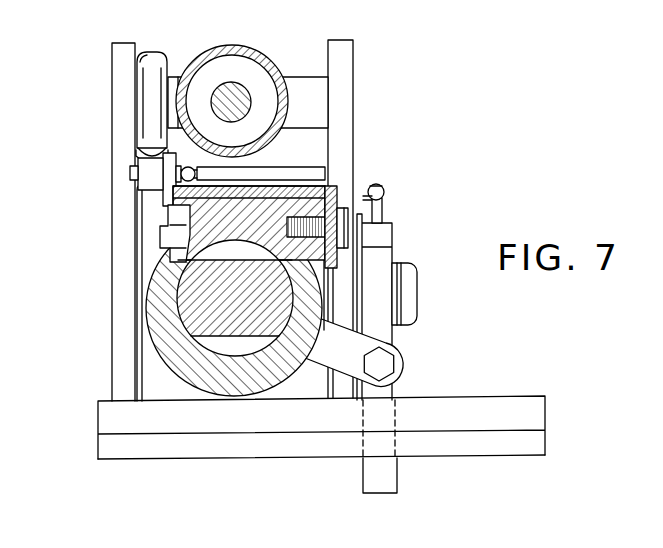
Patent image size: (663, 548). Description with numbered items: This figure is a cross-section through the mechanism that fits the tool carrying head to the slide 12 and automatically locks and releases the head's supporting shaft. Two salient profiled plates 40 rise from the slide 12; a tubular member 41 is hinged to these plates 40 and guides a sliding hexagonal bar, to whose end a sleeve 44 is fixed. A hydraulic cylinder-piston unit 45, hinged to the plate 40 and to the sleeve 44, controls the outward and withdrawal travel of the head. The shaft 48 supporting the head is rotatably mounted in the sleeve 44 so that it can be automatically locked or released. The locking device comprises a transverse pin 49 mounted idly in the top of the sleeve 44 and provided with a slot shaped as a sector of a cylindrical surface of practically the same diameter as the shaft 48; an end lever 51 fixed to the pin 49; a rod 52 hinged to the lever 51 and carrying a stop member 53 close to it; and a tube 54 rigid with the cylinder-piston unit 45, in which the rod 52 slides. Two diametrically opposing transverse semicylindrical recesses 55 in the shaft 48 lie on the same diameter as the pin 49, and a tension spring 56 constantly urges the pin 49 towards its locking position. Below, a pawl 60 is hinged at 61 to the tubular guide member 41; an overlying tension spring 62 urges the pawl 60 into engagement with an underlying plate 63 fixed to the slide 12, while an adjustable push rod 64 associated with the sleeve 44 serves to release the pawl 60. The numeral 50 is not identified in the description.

The slide 12 is at (527, 452).
The salient profiled plates 40 is at (122, 48).
The tubular member 41 is at (158, 388).
The sleeve 44 is at (160, 348).
The hydraulic cylinder-piston unit 45 is at (266, 62).
The shaft 48 is at (188, 294).
The transverse pin 49 is at (328, 184).
The key 50 is at (168, 238).
The end lever 51 is at (164, 204).
The rod 52 is at (134, 186).
The stop member 53 is at (140, 153).
The tube 54 is at (148, 80).
The semicylindrical recesses 55 is at (240, 354).
The tension spring 56 is at (195, 178).
The pawl 60 is at (390, 468).
The hinge of pawl 61 is at (408, 293).
The tension spring 62 is at (385, 196).
The underlying plate 63 is at (520, 408).
The adjustable push rod 64 is at (384, 365).